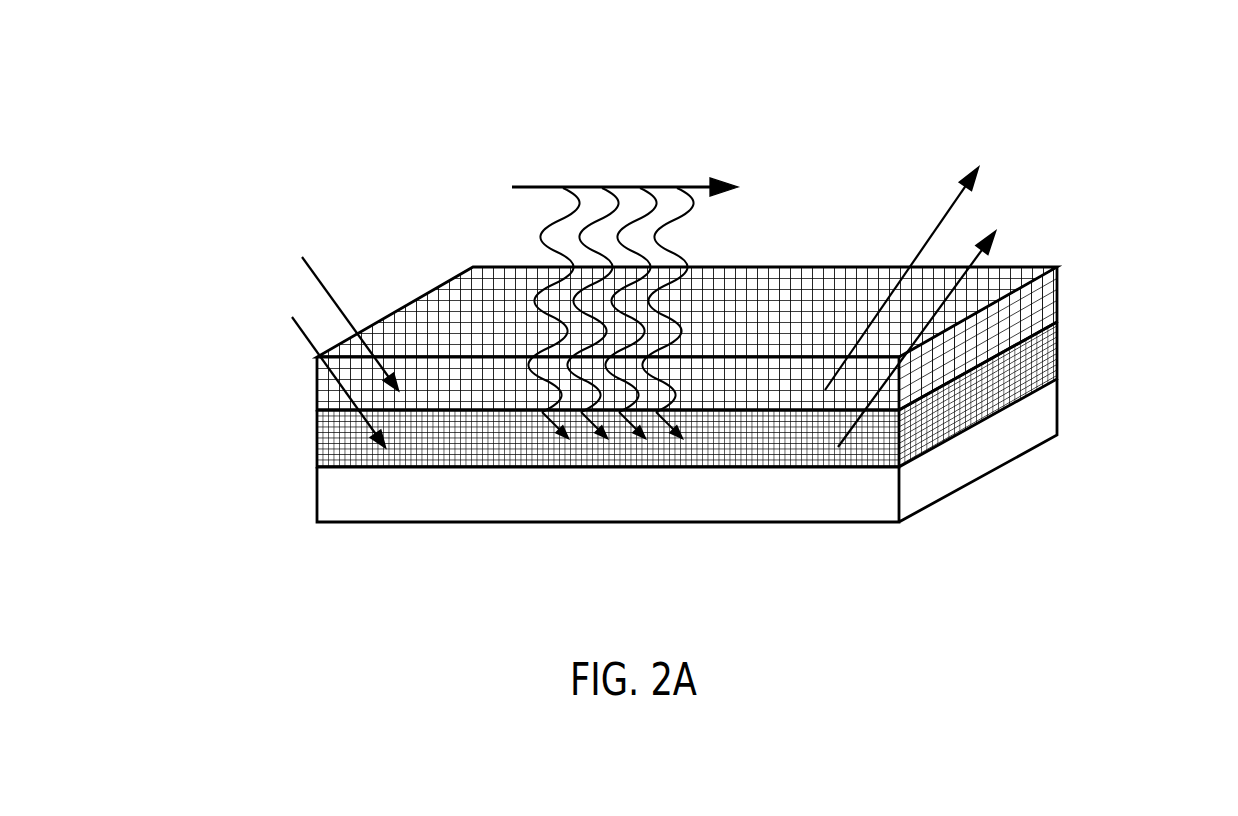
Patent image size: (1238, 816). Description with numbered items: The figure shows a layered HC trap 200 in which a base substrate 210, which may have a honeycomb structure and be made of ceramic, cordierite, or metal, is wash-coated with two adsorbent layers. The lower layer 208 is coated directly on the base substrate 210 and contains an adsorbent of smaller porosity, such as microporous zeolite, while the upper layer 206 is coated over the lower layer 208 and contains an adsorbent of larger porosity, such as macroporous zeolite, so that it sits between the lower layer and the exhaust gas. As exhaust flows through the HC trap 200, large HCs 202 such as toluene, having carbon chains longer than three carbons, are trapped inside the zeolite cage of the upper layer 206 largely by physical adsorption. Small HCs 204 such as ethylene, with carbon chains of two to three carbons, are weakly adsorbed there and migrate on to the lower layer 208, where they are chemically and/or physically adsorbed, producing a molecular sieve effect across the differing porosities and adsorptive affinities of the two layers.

The layered HC trap 200 is at (1134, 66).
The large HCs 202 is at (248, 243).
The small HCs 204 is at (240, 308).
The upper layer 206 is at (317, 382).
The lower layer 208 is at (317, 439).
The base substrate 210 is at (317, 495).